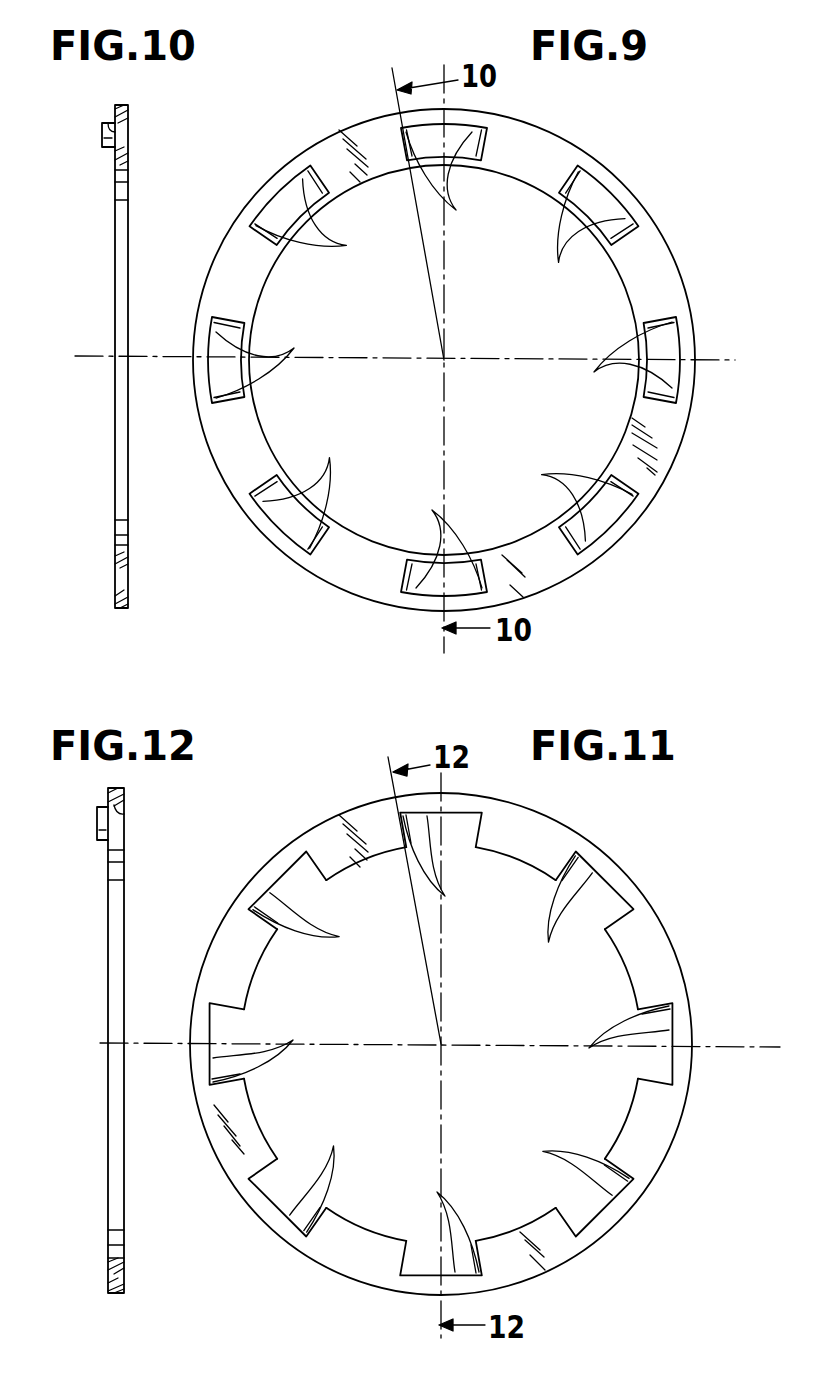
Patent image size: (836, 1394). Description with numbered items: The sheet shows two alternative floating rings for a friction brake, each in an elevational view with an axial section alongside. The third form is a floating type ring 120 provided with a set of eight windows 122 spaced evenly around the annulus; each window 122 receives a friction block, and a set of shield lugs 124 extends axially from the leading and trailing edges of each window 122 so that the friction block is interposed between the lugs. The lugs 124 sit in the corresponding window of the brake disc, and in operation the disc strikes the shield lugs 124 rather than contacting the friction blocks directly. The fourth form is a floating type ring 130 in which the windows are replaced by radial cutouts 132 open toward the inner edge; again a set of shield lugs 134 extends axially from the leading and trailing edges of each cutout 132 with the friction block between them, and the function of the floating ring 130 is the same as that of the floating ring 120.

In FIG. 10, the floating type ring 120 is at (114, 337).
In FIG. 9, the floating type ring 120 is at (684, 272).
In FIG. 10, the windows 122 is at (111, 125).
In FIG. 9, the windows 122 is at (473, 127).
In FIG. 10, the shield lugs 124 is at (100, 140).
In FIG. 9, the shield lugs 124 is at (305, 228).
In FIG. 12, the floating type ring 130 is at (116, 1040).
In FIG. 11, the floating type ring 130 is at (681, 949).
In FIG. 12, the radial cutouts 132 is at (125, 807).
In FIG. 11, the radial cutouts 132 is at (460, 808).
In FIG. 12, the shield lugs 134 is at (102, 835).
In FIG. 11, the shield lugs 134 is at (410, 845).